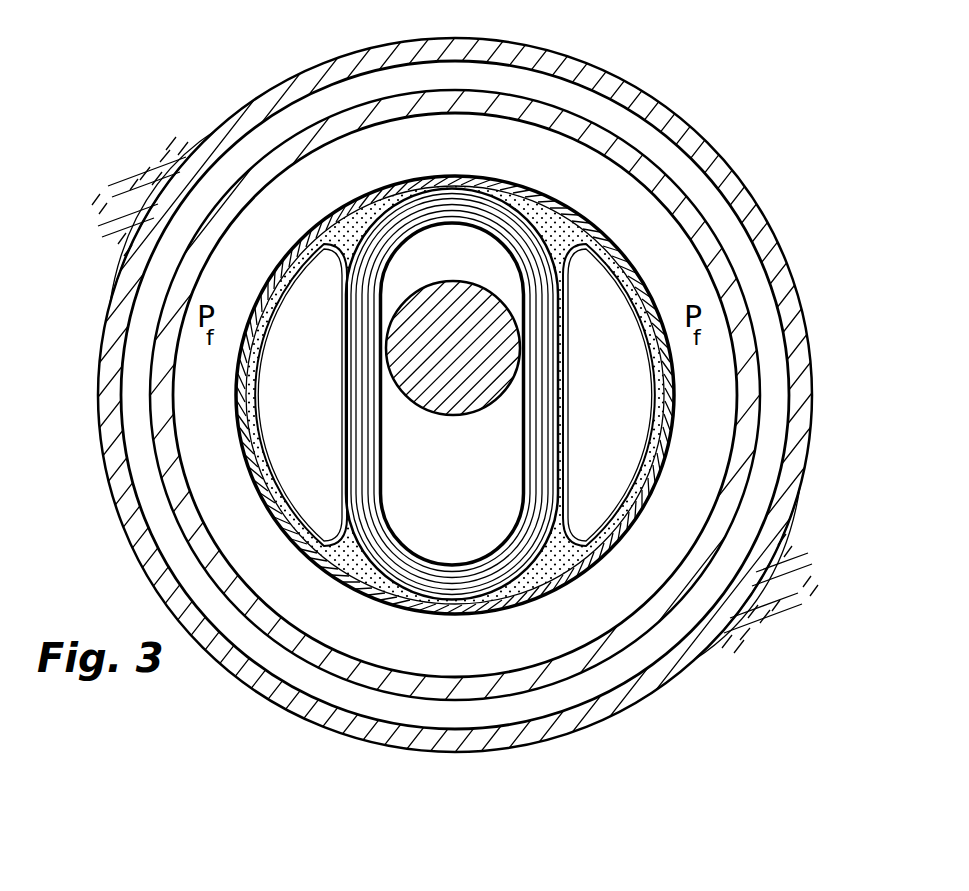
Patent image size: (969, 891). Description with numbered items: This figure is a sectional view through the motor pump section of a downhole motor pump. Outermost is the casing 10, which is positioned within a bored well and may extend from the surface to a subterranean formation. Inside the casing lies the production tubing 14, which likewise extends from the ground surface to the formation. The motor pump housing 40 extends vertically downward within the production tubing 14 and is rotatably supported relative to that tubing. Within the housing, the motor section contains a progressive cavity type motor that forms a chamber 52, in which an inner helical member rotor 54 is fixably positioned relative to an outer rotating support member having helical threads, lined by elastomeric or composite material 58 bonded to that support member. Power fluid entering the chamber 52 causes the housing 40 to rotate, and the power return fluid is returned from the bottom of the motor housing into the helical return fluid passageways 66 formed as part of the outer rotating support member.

The casing 10 is at (660, 115).
The production tubing 14 is at (690, 212).
The motor pump housing 40 is at (612, 548).
The chamber 52 is at (468, 524).
The inner helical member rotor 54 is at (466, 416).
The elastomeric or composite material 58 is at (493, 230).
The helical return fluid passageways 66 is at (321, 401).